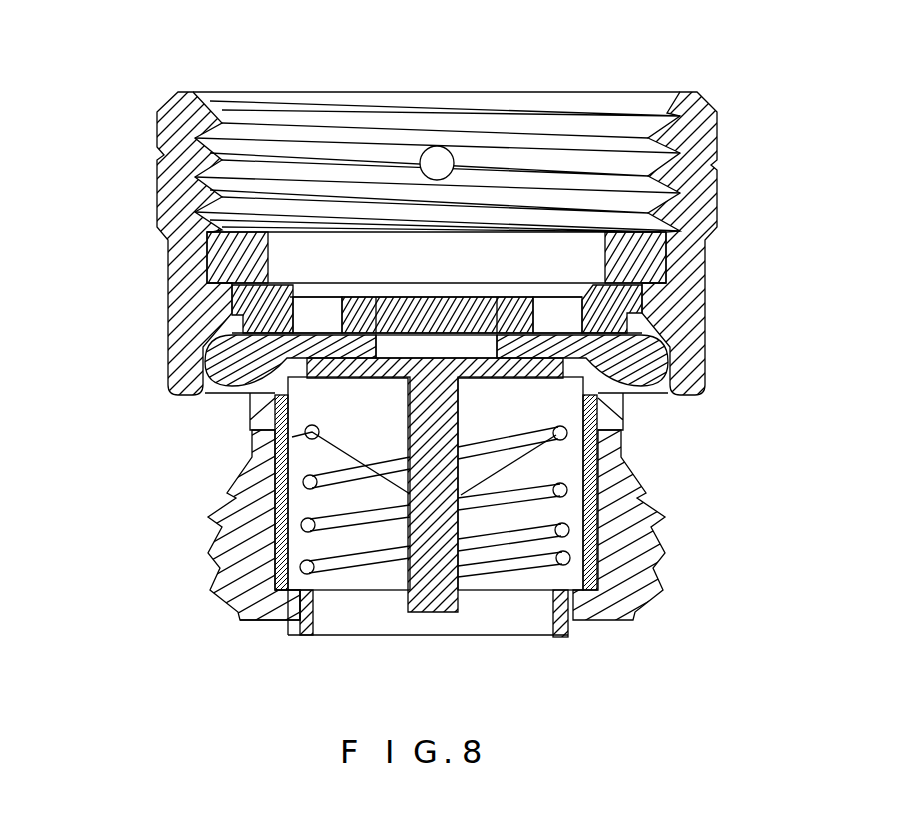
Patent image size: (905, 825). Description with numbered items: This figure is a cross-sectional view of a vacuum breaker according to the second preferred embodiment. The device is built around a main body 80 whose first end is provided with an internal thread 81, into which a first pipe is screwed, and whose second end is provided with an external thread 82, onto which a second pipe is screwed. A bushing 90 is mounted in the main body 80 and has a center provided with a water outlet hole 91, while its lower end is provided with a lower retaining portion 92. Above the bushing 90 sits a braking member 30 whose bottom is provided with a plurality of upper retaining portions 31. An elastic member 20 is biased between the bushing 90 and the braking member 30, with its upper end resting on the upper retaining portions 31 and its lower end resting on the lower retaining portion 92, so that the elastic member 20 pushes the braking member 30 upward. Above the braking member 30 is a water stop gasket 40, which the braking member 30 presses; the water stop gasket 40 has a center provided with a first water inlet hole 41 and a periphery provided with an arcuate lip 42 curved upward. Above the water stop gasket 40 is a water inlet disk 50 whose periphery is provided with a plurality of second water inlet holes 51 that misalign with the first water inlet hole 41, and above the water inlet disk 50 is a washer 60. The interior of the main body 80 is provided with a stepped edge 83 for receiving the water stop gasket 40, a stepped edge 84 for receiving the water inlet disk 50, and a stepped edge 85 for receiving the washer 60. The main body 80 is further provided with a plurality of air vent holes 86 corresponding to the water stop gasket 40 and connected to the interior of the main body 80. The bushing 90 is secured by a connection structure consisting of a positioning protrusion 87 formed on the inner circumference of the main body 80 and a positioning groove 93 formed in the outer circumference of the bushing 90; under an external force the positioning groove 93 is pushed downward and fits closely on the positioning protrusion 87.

The elastic member 20 is at (310, 480).
The braking member 30 is at (362, 372).
The upper retaining portions 31 is at (557, 435).
The water stop gasket 40 is at (352, 347).
The first water inlet hole 41 is at (443, 345).
The arcuate lip 42 is at (665, 349).
The water inlet disk 50 is at (630, 300).
The second water inlet holes 51 is at (313, 310).
The washer 60 is at (650, 262).
The main body 80 is at (160, 152).
The internal thread 81 is at (431, 125).
The external thread 82 is at (240, 555).
The stepped edge 83 is at (212, 352).
The stepped edge 84 is at (240, 312).
The stepped edge 85 is at (220, 282).
The air vent holes 86 is at (225, 397).
The positioning protrusion 87 is at (290, 610).
The bushing 90 is at (592, 450).
The water outlet hole 91 is at (437, 622).
The lower retaining portion 92 is at (565, 588).
The positioning groove 93 is at (307, 620).